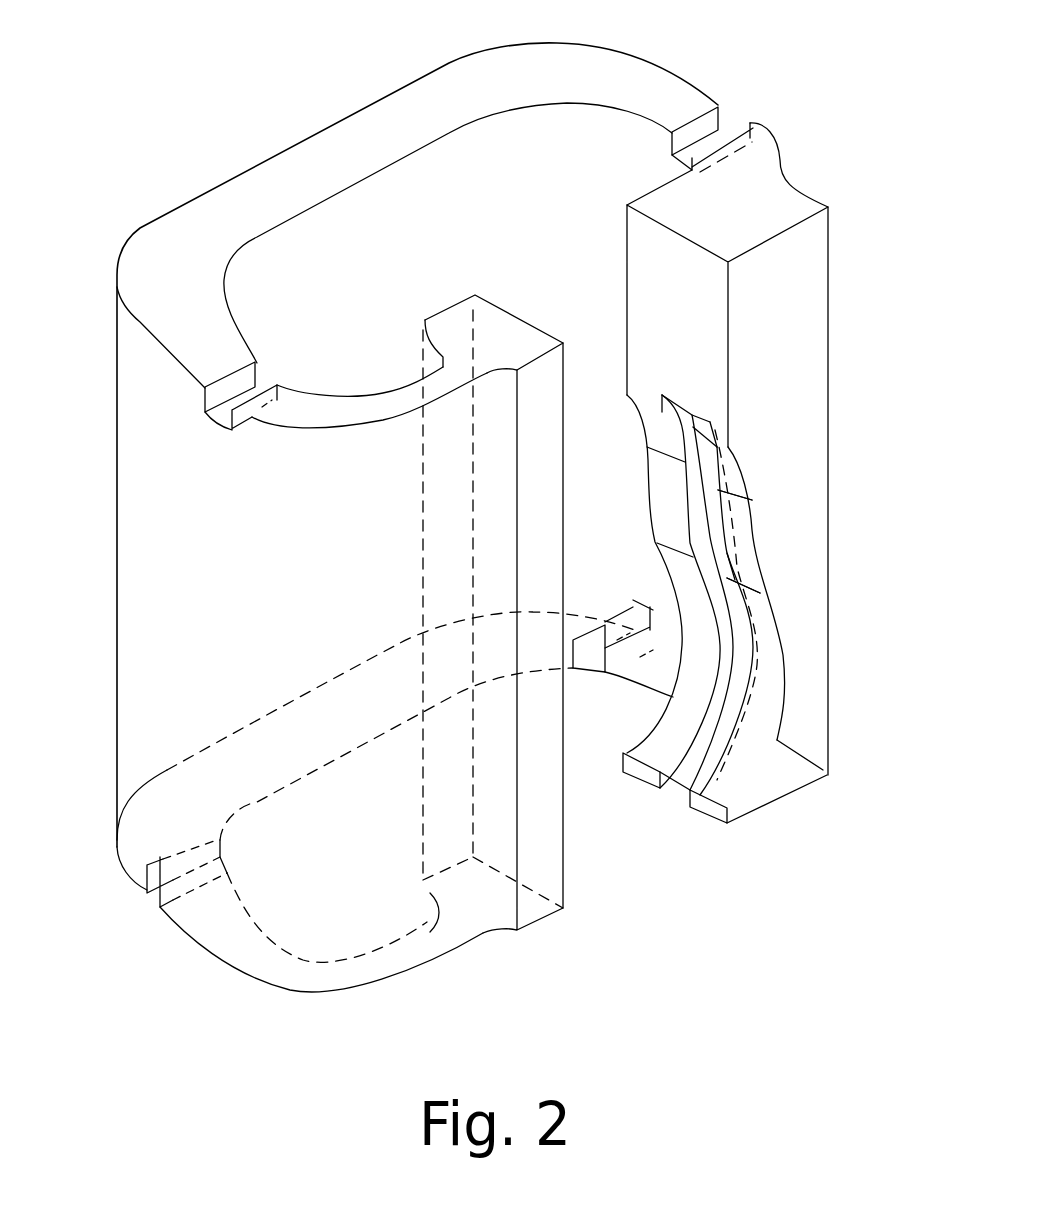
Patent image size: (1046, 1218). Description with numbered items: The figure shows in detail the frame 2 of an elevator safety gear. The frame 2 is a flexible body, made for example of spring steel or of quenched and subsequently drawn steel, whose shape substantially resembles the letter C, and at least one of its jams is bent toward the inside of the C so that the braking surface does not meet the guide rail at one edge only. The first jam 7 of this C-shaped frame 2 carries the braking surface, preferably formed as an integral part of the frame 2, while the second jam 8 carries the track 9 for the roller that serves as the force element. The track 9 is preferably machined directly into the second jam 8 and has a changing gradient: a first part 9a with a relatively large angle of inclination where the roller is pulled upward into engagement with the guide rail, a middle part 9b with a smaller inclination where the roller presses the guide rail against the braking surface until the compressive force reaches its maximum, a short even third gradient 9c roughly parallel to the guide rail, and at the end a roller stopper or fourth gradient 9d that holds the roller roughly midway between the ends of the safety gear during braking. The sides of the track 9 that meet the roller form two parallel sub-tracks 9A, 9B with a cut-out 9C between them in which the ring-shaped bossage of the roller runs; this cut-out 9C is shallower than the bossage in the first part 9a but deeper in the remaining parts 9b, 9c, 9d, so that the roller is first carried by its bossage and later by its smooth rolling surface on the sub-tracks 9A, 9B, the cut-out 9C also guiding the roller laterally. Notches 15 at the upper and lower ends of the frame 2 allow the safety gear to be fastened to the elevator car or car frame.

The frame 2 is at (247, 545).
The first jam 7 is at (443, 943).
The second jam 8 is at (803, 375).
The track 9 is at (770, 697).
The first part of the track 9a is at (757, 625).
The middle part of the track 9b is at (743, 560).
The third gradient 9c is at (750, 498).
The roller stopper 9d is at (743, 468).
The first sub-track 9A is at (652, 760).
The second sub-track 9B is at (710, 797).
The cut-out 9C is at (683, 777).
The notches 15 is at (230, 379).